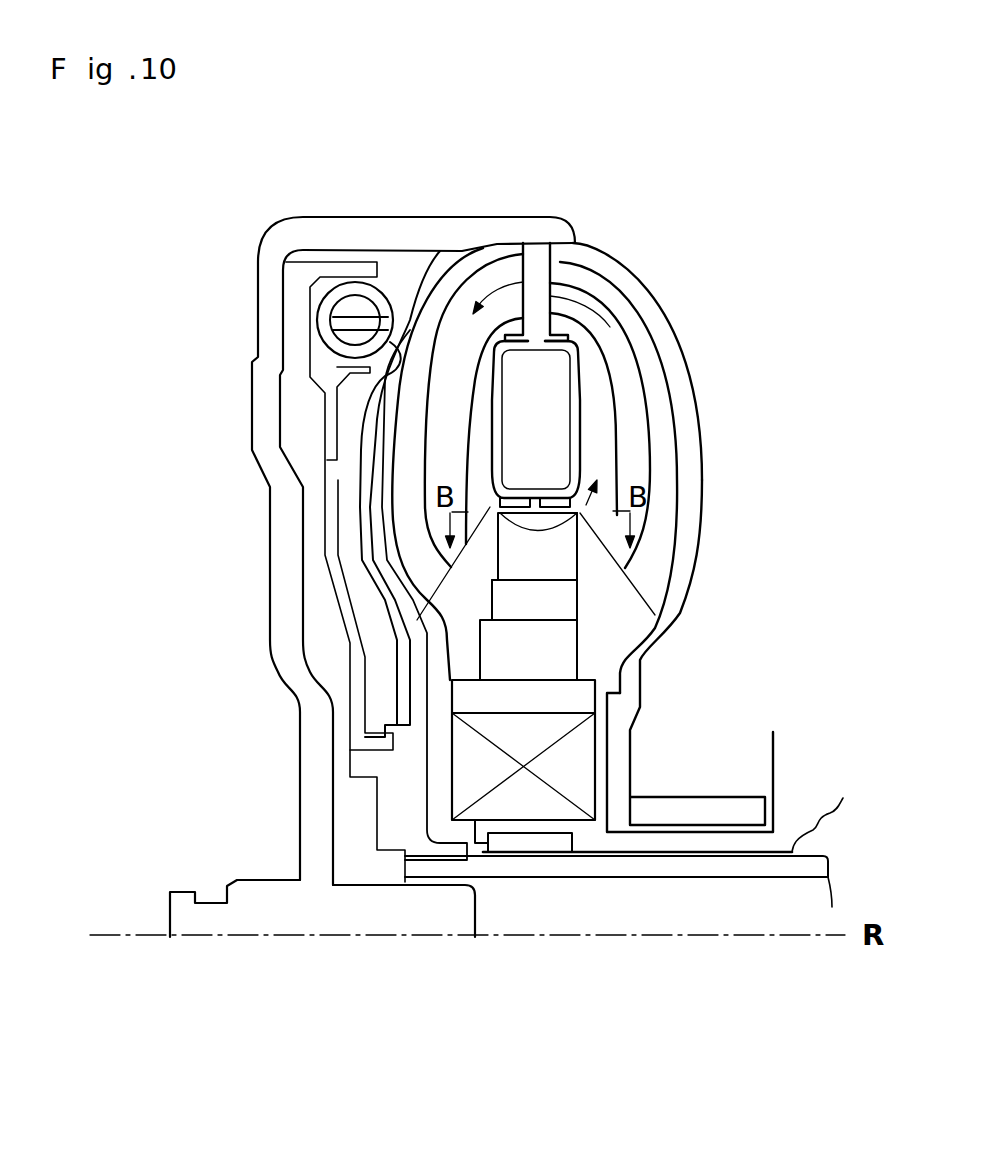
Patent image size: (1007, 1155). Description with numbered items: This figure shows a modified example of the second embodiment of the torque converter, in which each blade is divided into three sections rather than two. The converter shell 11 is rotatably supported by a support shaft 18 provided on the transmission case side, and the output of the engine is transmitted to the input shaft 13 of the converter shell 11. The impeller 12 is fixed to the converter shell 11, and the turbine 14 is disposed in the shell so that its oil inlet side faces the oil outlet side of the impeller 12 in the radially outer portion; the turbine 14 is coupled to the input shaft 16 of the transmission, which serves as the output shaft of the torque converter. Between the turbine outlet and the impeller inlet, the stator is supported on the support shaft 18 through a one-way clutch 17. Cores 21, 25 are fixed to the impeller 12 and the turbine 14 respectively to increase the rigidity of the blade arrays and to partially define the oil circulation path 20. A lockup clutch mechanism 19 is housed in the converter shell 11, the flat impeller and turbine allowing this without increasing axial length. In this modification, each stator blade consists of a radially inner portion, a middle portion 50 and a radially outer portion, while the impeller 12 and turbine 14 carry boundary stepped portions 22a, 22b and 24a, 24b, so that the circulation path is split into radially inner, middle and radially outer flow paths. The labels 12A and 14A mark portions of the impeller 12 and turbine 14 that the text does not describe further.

The converter shell 11 is at (283, 224).
The impeller 12 is at (718, 540).
The bracket cylindrical portion 12A is at (667, 493).
The input shaft 13 is at (237, 878).
The turbine 14 is at (458, 258).
The stator core yoke portion 14A is at (450, 307).
The input shaft of a transmission 16 is at (822, 865).
The one-way clutch 17 is at (530, 803).
The support shaft 18 is at (663, 845).
The lockup clutch mechanism 19 is at (313, 413).
The oil circulation path 20 is at (630, 393).
The core 21 is at (578, 357).
The boundary stepped portion 22a is at (620, 450).
The boundary stepped portion 22b is at (633, 348).
The boundary stepped portion 24a is at (457, 440).
The boundary stepped portion 24b is at (422, 487).
The core 25 is at (510, 397).
The middle portion 50 is at (510, 598).